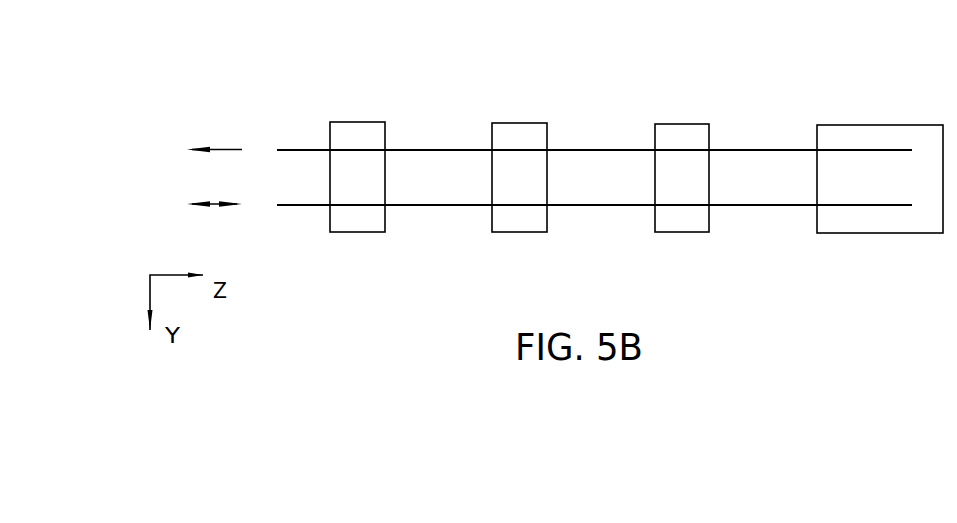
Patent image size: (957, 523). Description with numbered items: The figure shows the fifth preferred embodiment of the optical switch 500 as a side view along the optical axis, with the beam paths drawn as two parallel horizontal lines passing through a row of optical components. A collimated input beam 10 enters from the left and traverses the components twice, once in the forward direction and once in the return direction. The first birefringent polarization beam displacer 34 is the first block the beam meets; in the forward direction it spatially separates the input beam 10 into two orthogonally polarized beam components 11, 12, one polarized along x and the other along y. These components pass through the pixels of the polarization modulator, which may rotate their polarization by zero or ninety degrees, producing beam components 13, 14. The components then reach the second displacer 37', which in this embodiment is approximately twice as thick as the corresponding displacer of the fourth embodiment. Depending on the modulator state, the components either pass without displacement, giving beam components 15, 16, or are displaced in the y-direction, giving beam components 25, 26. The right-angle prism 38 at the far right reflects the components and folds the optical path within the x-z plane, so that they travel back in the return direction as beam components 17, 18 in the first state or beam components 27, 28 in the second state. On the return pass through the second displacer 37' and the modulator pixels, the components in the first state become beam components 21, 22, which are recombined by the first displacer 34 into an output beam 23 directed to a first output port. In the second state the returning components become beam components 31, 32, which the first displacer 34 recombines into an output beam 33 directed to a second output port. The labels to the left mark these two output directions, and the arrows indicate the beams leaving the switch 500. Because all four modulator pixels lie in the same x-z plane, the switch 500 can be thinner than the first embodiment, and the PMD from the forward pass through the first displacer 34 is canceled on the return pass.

The optical switch 500 is at (298, 42).
The collimated input beam 10 is at (575, 192).
The output beam 23 is at (190, 151).
The output beam 33 is at (190, 205).
The first birefringent polarization beam displacer 34 is at (358, 122).
The second displacer 37' is at (682, 146).
The right-angle prism 38 is at (880, 125).
The beam component 31 is at (440, 123).
The beam component 32 is at (440, 148).
The beam component 25 is at (763, 110).
The beam component 26 is at (763, 110).
The beam component 27 is at (763, 110).
The beam component 28 is at (764, 148).
The beam component 11 is at (439, 251).
The beam component 12 is at (439, 251).
The beam component 21 is at (439, 251).
The beam component 22 is at (437, 207).
The beam component 13 is at (601, 254).
The beam component 14 is at (601, 254).
The beam component 17 is at (601, 254).
The beam component 18 is at (600, 207).
The beam component 15 is at (763, 254).
The beam component 16 is at (762, 207).